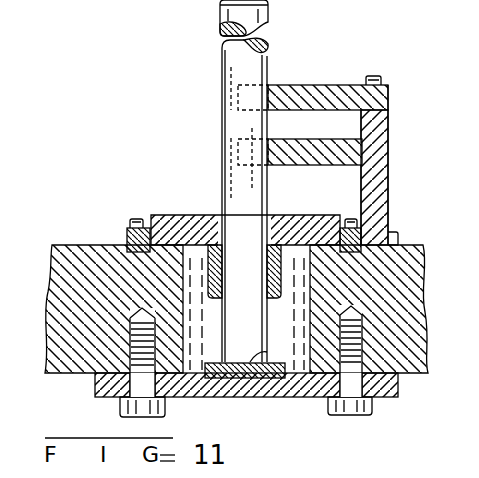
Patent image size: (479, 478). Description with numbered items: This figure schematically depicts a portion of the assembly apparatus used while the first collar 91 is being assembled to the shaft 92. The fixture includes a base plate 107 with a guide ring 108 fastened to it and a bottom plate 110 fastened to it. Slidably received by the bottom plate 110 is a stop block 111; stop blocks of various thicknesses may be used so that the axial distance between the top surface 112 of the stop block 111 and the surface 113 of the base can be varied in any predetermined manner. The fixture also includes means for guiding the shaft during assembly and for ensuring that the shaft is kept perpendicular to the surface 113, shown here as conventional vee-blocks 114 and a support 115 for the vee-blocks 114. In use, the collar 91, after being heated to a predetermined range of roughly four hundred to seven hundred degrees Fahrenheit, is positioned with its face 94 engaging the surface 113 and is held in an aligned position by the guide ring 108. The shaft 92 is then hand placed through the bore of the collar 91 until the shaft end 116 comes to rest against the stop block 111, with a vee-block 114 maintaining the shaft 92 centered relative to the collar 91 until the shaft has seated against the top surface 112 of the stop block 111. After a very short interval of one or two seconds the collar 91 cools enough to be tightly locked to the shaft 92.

The shaft 92 is at (257, 67).
The vee-blocks 114 is at (337, 85).
The support 115 is at (381, 144).
The first collar 91 is at (292, 215).
The face 94 is at (283, 288).
The base plate 107 is at (86, 270).
The surface 113 is at (413, 245).
The guide ring 108 is at (130, 229).
The top surface 112 is at (211, 364).
The shaft end 116 is at (278, 365).
The stop block 111 is at (235, 375).
The bottom plate 110 is at (303, 384).